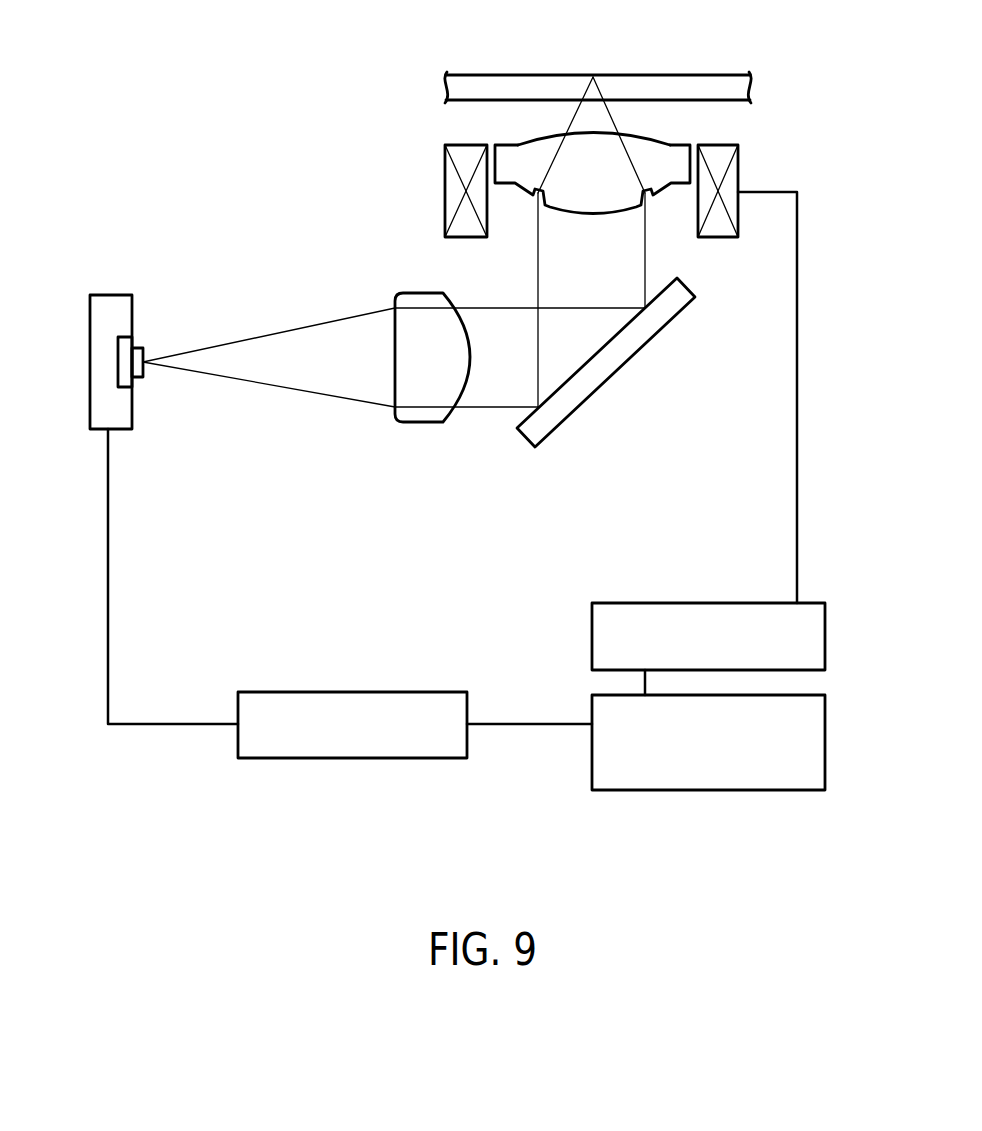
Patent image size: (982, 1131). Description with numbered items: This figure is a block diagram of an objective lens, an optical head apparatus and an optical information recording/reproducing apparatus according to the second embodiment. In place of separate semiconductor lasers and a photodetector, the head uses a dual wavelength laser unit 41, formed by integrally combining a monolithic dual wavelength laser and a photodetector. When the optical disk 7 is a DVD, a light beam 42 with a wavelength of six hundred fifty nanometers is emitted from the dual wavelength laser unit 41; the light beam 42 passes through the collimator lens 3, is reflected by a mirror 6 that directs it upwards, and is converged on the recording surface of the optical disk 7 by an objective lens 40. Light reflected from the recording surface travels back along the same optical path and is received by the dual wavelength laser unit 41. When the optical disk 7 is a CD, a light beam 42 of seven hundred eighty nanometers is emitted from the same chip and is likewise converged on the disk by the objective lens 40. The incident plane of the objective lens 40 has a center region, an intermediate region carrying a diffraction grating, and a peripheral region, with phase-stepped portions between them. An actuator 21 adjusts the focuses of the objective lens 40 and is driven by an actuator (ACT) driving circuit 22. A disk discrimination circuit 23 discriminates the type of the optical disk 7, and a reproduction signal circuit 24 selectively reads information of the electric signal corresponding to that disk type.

The optical disk 7 is at (519, 82).
The objective lens 40 is at (527, 151).
The actuator 21 is at (739, 169).
The dual wavelength laser unit 41 is at (117, 304).
The light beam 42 is at (297, 327).
The collimator lens 3 is at (412, 418).
The mirror 6 is at (615, 358).
The actuator (ACT) driving circuit 22 is at (690, 603).
The disk discrimination circuit 23 is at (790, 790).
The reproduction signal circuit 24 is at (345, 758).